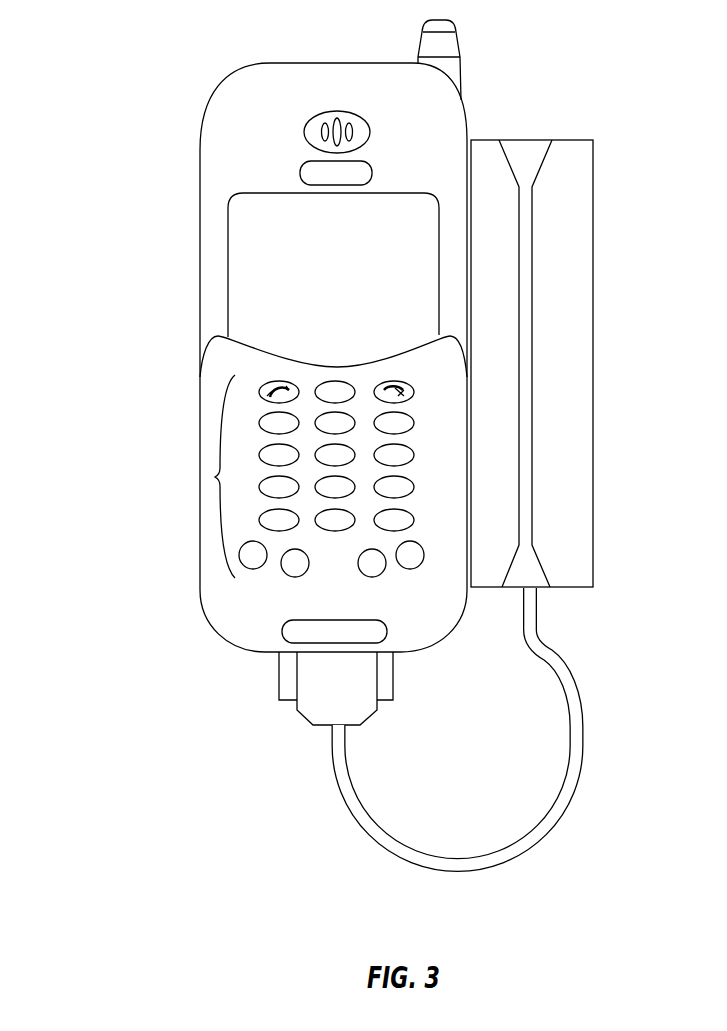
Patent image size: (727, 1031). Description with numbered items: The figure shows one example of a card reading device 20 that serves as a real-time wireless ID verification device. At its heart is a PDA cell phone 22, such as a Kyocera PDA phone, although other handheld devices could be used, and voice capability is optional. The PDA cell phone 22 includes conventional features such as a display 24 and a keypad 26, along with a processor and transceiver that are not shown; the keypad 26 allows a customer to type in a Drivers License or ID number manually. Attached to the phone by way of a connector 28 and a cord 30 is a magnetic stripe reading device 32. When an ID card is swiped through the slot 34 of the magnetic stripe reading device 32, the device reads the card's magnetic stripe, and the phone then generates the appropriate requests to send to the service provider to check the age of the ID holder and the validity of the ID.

The card reading device 20 is at (118, 62).
The PDA cell phone 22 is at (277, 63).
The display 24 is at (272, 284).
The keypad 26 is at (215, 477).
The connector 28 is at (368, 717).
The cord 30 is at (562, 784).
The magnetic stripe reading device 32 is at (593, 190).
The slot 34 is at (525, 178).